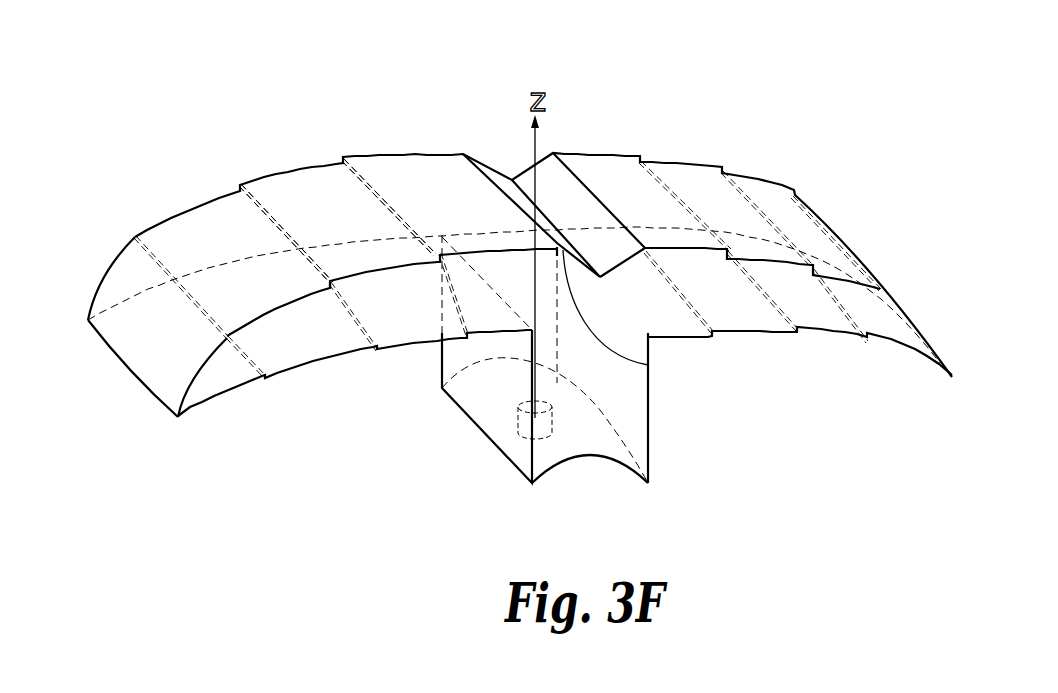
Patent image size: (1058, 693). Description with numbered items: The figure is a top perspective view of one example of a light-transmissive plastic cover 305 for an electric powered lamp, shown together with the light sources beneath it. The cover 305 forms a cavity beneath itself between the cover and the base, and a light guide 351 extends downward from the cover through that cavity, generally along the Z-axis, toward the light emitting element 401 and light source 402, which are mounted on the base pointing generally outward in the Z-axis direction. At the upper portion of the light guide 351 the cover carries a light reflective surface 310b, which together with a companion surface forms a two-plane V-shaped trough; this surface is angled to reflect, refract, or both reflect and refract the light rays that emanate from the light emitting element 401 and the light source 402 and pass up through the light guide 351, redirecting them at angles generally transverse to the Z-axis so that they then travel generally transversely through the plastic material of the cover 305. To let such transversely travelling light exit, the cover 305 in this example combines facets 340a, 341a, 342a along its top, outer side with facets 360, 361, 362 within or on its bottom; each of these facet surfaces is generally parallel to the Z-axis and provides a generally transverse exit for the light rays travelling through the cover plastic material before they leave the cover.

The cover 305 is at (747, 120).
The facet 340a is at (367, 192).
The facet 341a is at (260, 217).
The facet 342a is at (158, 272).
The facet 360 is at (420, 303).
The facet 361 is at (347, 325).
The facet 362 is at (240, 350).
The reflective surface 310b is at (633, 357).
The light guide 351 is at (623, 400).
The light emitting element 401 is at (570, 467).
The light source 402 is at (512, 415).